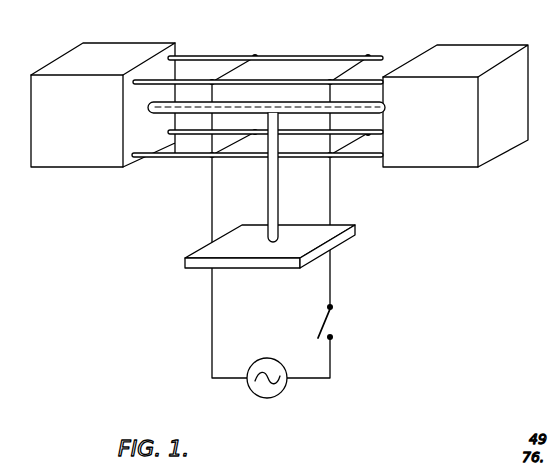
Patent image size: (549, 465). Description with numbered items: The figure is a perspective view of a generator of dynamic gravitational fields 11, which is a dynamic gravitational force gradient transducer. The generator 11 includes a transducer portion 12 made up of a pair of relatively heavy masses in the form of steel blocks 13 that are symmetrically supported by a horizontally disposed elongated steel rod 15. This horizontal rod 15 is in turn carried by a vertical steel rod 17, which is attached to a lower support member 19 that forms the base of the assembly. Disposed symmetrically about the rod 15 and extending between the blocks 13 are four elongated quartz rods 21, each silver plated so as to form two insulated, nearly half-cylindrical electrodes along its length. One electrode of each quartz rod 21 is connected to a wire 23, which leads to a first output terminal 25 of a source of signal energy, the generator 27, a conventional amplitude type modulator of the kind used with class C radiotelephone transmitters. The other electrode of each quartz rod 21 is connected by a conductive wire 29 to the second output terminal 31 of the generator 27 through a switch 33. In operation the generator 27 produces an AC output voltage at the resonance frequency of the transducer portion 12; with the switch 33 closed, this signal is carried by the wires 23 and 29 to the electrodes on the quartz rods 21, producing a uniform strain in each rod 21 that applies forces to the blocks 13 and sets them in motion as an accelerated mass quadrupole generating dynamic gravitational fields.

The generator of dynamic gravitational fields 11 is at (150, 265).
The transducer portion 12 is at (326, 82).
The steel blocks 13 is at (138, 37).
The elongated steel rod 15 is at (307, 95).
The vertical steel rod 17 is at (268, 191).
The lower support member 19 is at (199, 255).
The quartz rods 21 is at (200, 57).
The wire 23 is at (210, 330).
The first output terminal 25 is at (246, 377).
The generator 27 is at (248, 391).
The conductive wire 29 is at (334, 292).
The second output terminal 31 is at (287, 380).
The switch 33 is at (328, 325).